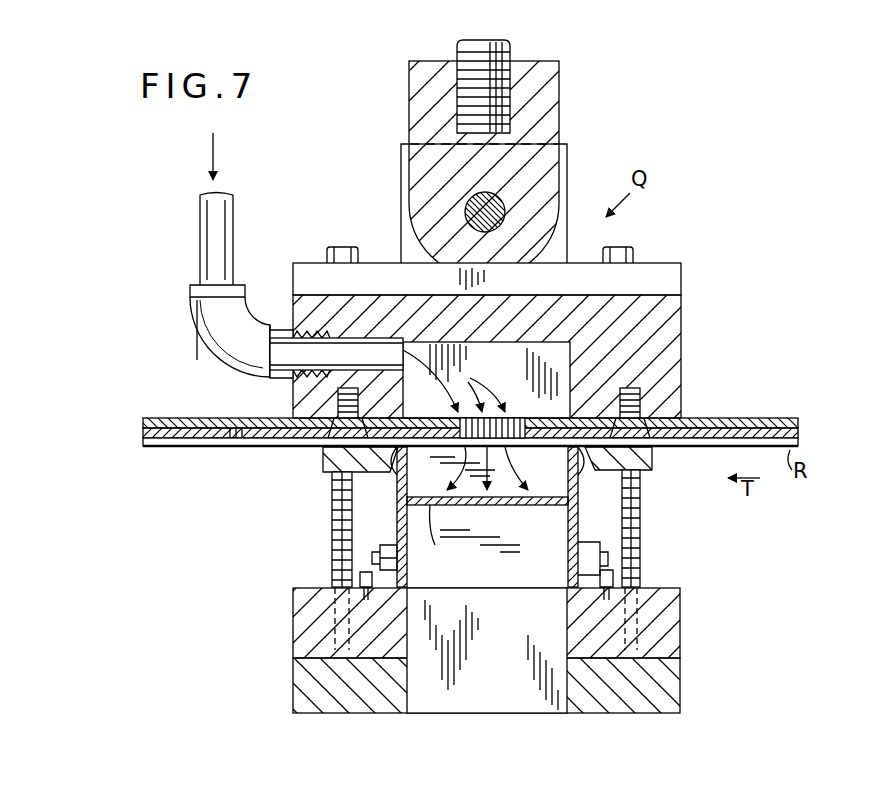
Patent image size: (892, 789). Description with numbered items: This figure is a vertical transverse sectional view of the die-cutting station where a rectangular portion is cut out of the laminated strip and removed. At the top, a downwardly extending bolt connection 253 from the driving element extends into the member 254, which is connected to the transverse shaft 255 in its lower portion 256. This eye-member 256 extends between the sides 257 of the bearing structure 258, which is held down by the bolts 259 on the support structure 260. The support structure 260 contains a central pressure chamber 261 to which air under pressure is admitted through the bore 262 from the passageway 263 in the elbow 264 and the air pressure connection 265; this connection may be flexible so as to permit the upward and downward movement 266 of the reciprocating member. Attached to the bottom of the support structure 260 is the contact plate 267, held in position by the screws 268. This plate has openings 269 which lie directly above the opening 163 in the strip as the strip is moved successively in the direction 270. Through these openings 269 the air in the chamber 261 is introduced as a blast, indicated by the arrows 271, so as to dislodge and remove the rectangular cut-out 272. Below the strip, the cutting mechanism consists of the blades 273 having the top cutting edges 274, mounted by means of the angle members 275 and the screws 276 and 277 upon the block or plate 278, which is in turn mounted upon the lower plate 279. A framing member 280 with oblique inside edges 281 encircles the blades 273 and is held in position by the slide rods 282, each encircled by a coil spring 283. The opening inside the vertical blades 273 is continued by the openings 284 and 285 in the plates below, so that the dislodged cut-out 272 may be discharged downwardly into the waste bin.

The opening 163 is at (520, 450).
The bolt connection 253 is at (466, 55).
The member 254 is at (557, 68).
The transverse shaft 255 is at (466, 210).
The eye-member 256 is at (547, 178).
The sides of the bearing structure 257 is at (569, 238).
The bearing structure 258 is at (681, 272).
The bolts 259 is at (634, 255).
The support structure 260 is at (681, 330).
The central pressure chamber 261 is at (540, 345).
The bore 262 is at (345, 340).
The passageway 263 is at (280, 376).
The elbow 264 is at (212, 355).
The air pressure connection 265 is at (234, 216).
The upward and downward movement 266 is at (371, 122).
The contact plate 267 is at (681, 426).
The screws 268 is at (334, 398).
The openings 269 is at (460, 416).
The direction 270 is at (764, 509).
The arrows 271 is at (457, 379).
The rectangular cut-out 272 is at (487, 517).
The blades 273 is at (398, 528).
The top cutting edges 274 is at (398, 488).
The angle members 275 is at (615, 566).
The screws 276 is at (577, 560).
The screws 277 is at (645, 608).
The block or plate 278 is at (681, 628).
The lower plate 279 is at (681, 684).
The framing member 280 is at (653, 460).
The oblique inside edges 281 is at (326, 466).
The slide rods 282 is at (641, 496).
The coil spring 283 is at (641, 530).
The opening 284 is at (484, 650).
The opening 285 is at (537, 705).